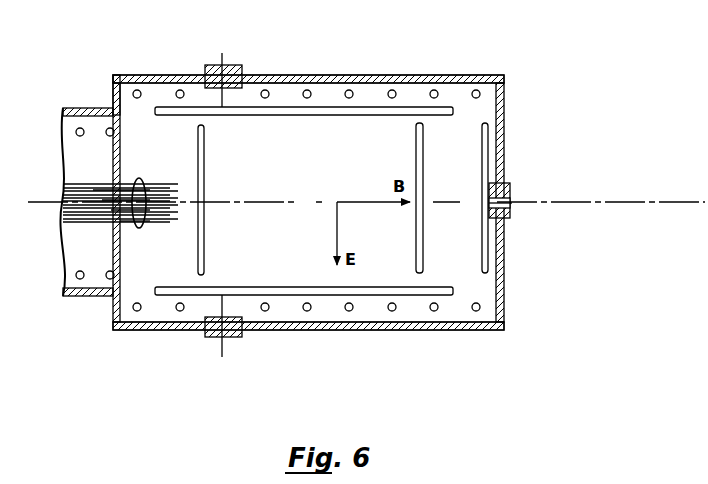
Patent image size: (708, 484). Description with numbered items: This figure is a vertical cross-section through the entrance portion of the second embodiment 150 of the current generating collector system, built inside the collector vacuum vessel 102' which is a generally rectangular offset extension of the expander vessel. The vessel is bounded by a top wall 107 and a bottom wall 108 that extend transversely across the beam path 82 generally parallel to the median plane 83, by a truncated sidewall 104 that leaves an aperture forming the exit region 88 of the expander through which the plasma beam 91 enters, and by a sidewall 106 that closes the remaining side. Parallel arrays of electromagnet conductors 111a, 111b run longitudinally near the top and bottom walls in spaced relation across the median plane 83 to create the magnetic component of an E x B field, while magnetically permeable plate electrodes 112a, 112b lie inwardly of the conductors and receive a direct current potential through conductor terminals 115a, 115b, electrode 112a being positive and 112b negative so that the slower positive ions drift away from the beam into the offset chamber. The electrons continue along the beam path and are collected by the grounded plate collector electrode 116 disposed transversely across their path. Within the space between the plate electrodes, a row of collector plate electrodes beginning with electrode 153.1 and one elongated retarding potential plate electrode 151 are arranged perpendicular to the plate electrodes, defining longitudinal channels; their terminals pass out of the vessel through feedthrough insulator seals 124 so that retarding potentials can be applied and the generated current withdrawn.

The vacuum vessel 102' is at (337, 217).
The truncated sidewall 104 is at (112, 90).
The sidewall 106 is at (504, 161).
The top wall 107 is at (285, 75).
The bottom wall 108 is at (356, 330).
The electromagnet conductors 111a is at (391, 91).
The electromagnet conductors 111b is at (393, 310).
The plate or grid electrode 112a is at (445, 107).
The plate or grid electrode 112b is at (453, 291).
The conductor terminal 115a is at (213, 64).
The conductor terminal 115b is at (218, 348).
The plate collector electrode 116 is at (494, 147).
The feedthrough insulator seal 124 is at (242, 336).
The second embodiment of current generating collector system 150 is at (276, 366).
The retarding potential plate electrode 151 is at (416, 143).
The collector plate electrode 153.1 is at (205, 147).
The beam path 82 is at (174, 201).
The median plane 83 is at (277, 202).
The exit region 88 is at (112, 171).
The plasma beam 91 is at (141, 216).